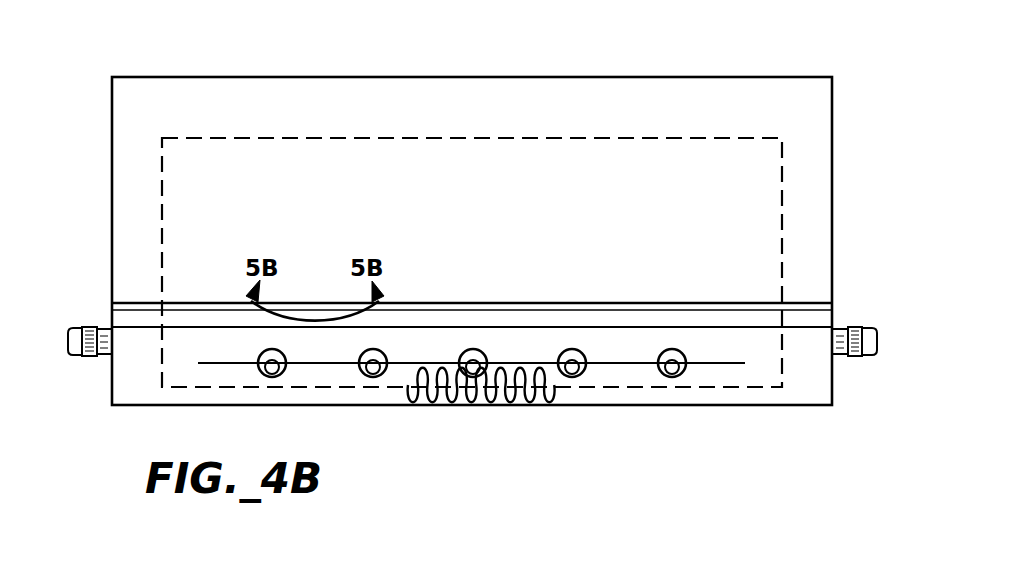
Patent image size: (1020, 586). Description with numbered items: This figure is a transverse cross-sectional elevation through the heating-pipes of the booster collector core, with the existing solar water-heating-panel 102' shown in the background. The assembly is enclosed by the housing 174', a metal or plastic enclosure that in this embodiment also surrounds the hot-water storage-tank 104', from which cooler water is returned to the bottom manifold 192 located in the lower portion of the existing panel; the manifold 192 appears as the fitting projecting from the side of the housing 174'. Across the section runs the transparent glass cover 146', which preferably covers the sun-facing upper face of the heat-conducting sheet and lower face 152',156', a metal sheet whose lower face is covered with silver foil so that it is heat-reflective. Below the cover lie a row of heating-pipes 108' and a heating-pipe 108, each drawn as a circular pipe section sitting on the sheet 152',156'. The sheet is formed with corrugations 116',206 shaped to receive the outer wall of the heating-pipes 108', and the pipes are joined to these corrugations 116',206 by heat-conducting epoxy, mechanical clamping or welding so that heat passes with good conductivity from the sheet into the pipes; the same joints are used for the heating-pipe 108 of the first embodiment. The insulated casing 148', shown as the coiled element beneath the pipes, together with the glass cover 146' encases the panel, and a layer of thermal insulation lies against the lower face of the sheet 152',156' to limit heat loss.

The housing 174' is at (472, 220).
The hot-water storage-tank 104' is at (483, 215).
The transparent glass cover 146' is at (472, 273).
The existing solar water-heating-panel 102' is at (472, 308).
The heat-conducting sheet and its lower face 152',156' is at (524, 406).
The corrugations 116',206 is at (542, 347).
The heating-pipe 108' is at (516, 324).
The heating-pipe 108 is at (707, 356).
The insulated casing 148' is at (518, 408).
The bottom manifold 192 is at (840, 328).